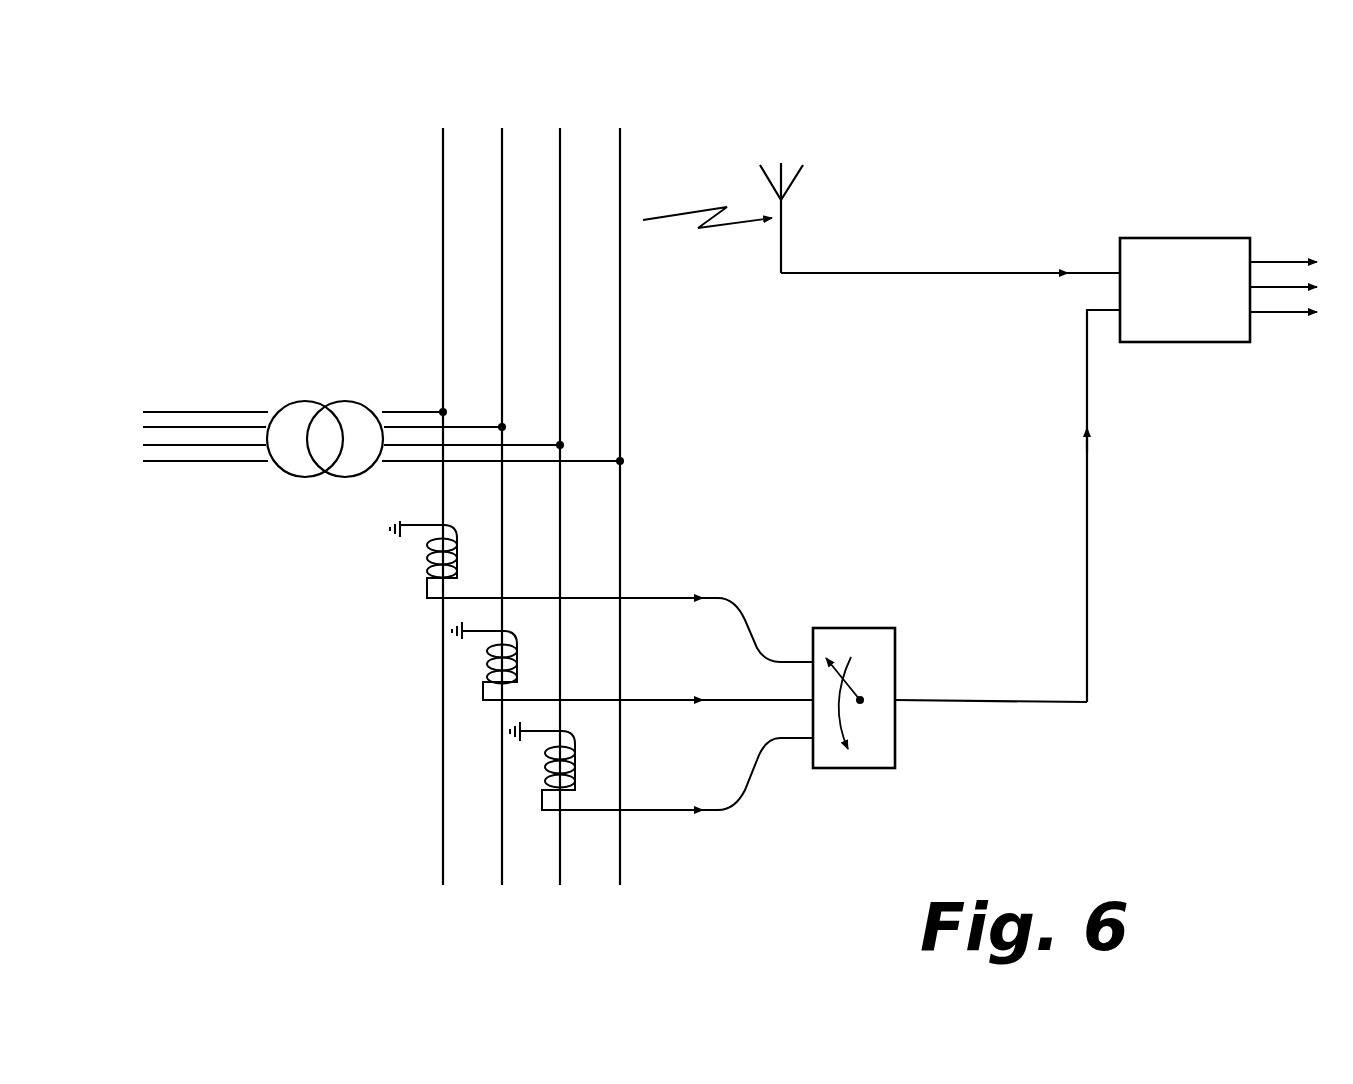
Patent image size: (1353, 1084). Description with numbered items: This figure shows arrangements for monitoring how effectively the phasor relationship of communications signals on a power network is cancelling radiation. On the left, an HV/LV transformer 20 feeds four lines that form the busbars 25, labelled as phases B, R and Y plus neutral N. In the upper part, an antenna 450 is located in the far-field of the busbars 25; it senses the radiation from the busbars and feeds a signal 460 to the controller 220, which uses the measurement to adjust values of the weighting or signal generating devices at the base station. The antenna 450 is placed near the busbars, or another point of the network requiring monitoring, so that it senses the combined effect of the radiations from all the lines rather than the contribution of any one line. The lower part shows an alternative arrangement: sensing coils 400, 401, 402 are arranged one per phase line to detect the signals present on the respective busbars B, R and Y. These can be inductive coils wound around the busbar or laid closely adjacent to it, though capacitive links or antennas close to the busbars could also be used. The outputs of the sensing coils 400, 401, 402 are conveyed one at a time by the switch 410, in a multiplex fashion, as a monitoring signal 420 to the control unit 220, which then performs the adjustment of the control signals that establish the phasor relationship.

The HV/LV transformer 20 is at (295, 460).
The busbars 25 is at (432, 856).
The controller 220 is at (1212, 302).
The sensing coil 400 is at (423, 560).
The sensing coil 401 is at (485, 663).
The sensing coil 402 is at (543, 767).
The switch 410 is at (870, 740).
The monitoring signal 420 is at (1088, 400).
The antenna 450 is at (782, 210).
The signal 460 is at (1017, 272).